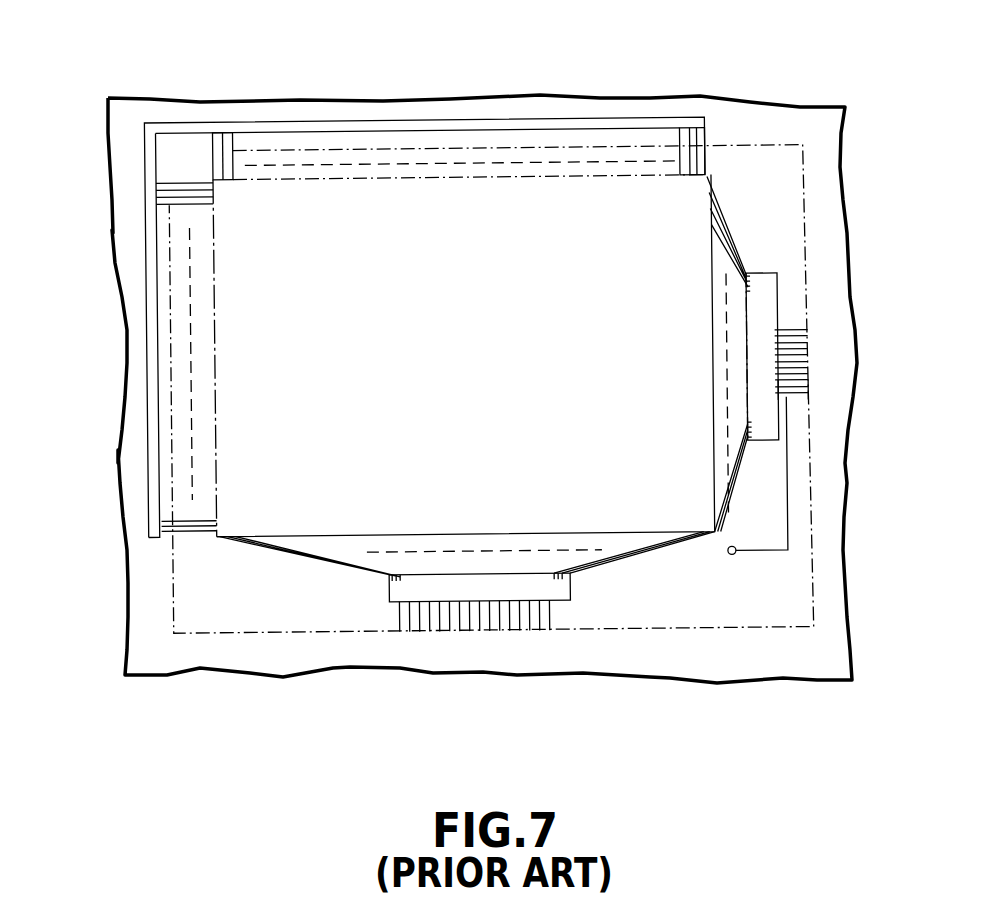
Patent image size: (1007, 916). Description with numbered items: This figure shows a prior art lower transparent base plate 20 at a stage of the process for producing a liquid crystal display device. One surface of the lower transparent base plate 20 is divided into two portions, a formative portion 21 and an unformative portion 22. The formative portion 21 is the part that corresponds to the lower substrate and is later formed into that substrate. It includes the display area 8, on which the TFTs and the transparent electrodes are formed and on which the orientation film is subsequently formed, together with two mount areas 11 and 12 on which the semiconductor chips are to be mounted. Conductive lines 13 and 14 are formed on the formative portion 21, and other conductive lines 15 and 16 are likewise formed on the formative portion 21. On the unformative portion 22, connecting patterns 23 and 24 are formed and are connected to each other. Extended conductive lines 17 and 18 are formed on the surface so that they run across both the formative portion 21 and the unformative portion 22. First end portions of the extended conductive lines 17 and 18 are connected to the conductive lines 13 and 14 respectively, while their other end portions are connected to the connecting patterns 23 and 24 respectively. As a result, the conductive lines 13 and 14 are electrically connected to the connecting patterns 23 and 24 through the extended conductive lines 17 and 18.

The display area 8 is at (414, 175).
The mount area 11 is at (391, 587).
The mount area 12 is at (763, 298).
The conductive line 13 is at (260, 548).
The conductive line 14 is at (729, 230).
The conductive line 15 is at (400, 606).
The conductive line 16 is at (797, 406).
The extended conductive line 17 is at (212, 162).
The extended conductive line 18 is at (179, 177).
The lower transparent base plate 20 is at (812, 104).
The formative portion 21 is at (794, 187).
The unformative portion 22 is at (770, 123).
The connecting pattern 23 is at (500, 125).
The connecting pattern 24 is at (155, 309).